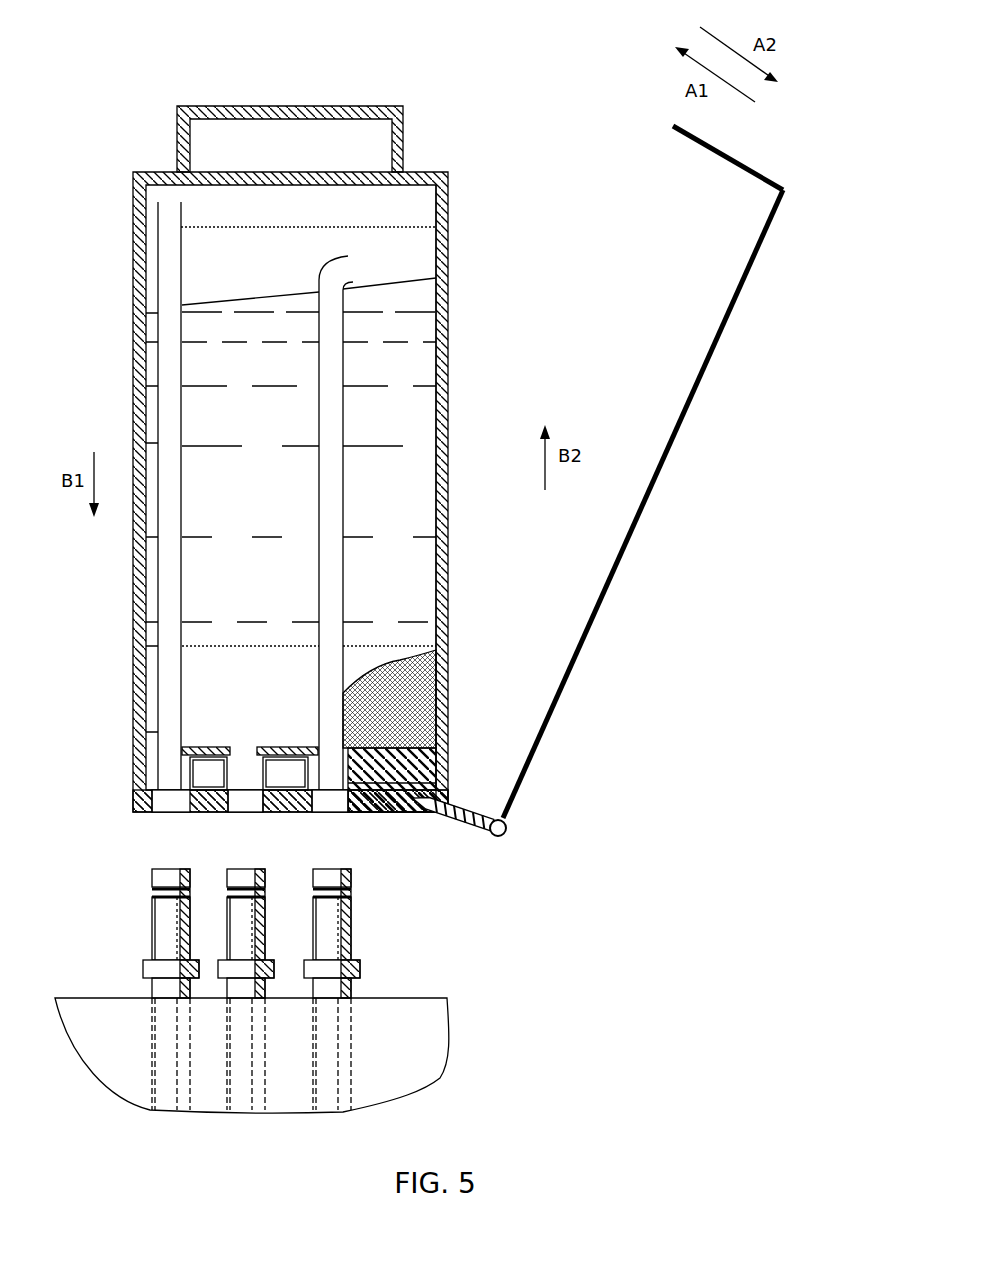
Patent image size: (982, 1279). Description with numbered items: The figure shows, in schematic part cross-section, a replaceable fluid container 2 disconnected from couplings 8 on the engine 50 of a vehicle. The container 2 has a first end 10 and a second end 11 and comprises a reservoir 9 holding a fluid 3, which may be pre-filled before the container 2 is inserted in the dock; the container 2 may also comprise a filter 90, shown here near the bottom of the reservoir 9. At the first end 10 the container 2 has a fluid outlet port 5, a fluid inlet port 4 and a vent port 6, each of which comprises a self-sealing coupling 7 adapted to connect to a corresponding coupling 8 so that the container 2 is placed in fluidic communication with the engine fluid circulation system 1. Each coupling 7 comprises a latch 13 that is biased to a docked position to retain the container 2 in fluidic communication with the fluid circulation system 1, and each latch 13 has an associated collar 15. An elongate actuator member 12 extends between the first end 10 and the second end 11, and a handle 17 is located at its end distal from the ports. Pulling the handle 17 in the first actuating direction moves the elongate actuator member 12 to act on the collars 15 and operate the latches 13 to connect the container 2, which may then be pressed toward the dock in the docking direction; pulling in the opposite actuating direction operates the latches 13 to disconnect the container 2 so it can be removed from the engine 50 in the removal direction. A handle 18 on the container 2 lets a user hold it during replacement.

The fluid circulation system 1 is at (350, 1046).
The fluid container 2 is at (448, 460).
The fluid 3 is at (436, 362).
The fluid inlet port 4 is at (448, 768).
The fluid outlet port 5 is at (232, 752).
The vent port 6 is at (133, 781).
The coupling 7 is at (316, 815).
The coupling 8 is at (352, 938).
The reservoir 9 is at (133, 290).
The first end 10 is at (474, 728).
The second end 11 is at (472, 173).
The elongate actuator member 12 is at (614, 588).
The latch 13 is at (333, 815).
The collar 15 is at (346, 815).
The handle 17 is at (753, 167).
The handle 18 is at (403, 135).
The engine 50 is at (441, 990).
The filter 90 is at (443, 692).